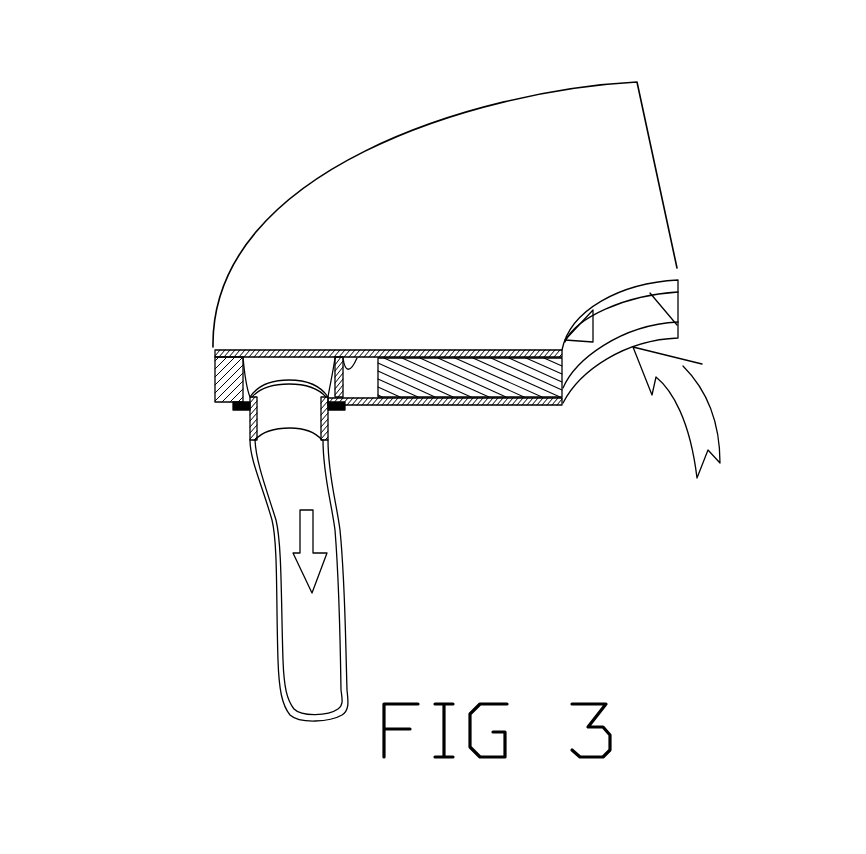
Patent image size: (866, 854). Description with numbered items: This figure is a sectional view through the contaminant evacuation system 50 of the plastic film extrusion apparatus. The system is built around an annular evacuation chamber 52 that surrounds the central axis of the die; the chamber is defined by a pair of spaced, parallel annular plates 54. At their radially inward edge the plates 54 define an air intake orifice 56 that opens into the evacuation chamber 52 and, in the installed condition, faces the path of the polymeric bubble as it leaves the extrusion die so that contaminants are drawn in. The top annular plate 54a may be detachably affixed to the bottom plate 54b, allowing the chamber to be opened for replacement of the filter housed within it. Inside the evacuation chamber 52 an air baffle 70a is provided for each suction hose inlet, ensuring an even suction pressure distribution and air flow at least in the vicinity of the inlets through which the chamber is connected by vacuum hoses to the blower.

The contaminant evacuation system 50 is at (670, 151).
The annular evacuation chamber 52 is at (389, 401).
The annular plates 54 is at (247, 334).
The top annular plate 54a is at (339, 204).
The bottom plate 54b is at (372, 423).
The air intake orifice 56 is at (665, 275).
The air baffle 70a is at (313, 339).